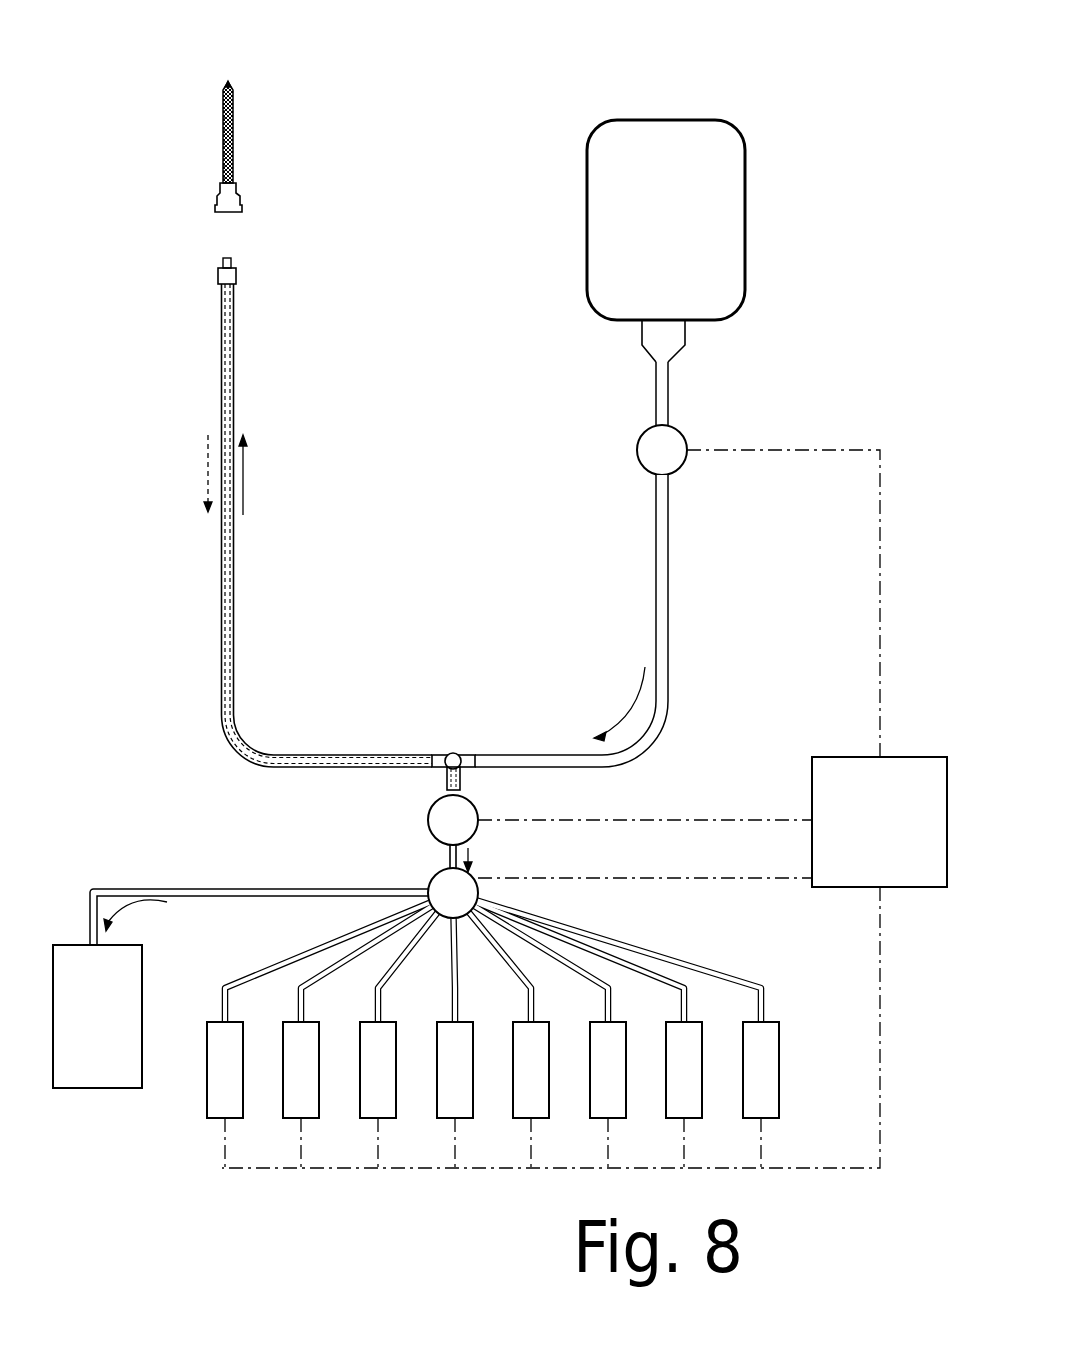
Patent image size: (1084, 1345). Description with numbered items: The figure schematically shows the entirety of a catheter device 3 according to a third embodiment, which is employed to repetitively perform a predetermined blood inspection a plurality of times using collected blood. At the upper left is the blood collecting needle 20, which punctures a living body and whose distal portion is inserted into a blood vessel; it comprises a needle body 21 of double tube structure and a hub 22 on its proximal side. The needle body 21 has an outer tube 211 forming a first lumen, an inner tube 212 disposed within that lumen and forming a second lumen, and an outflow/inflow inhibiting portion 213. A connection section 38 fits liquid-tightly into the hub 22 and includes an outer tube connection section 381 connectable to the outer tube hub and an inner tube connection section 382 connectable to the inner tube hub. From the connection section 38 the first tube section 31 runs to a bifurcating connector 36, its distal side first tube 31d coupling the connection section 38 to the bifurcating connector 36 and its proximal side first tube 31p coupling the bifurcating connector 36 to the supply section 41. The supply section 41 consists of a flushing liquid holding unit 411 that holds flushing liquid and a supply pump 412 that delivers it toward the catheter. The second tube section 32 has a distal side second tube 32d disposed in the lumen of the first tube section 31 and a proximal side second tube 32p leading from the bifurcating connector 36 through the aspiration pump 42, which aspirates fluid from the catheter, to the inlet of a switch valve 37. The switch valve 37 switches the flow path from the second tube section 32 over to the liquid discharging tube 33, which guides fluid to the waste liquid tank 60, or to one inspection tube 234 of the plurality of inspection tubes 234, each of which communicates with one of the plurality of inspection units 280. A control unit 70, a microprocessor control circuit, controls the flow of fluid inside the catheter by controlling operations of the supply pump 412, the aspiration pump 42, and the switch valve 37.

The catheter device 3 is at (86, 35).
The blood collecting needle 20 is at (128, 207).
The needle body 21 is at (225, 113).
The outer tube 211 is at (233, 137).
The inner tube 212 is at (237, 158).
The outflow/inflow inhibiting portion 213 is at (236, 88).
The hub 22 is at (222, 202).
The connection section 38 is at (106, 352).
The outer tube connection section 381 is at (218, 283).
The inner tube connection section 382 is at (222, 263).
The first tube section 31 is at (358, 658).
The distal side first tube 31d is at (390, 752).
The proximal side first tube 31p is at (500, 752).
The bifurcating connector 36 is at (462, 768).
The second tube section 32 is at (351, 880).
The distal side second tube 32d is at (415, 806).
The proximal side second tube 32p is at (449, 858).
The aspiration pump 42 is at (480, 826).
The switch valve 37 is at (465, 889).
The liquid discharging tube 33 is at (217, 888).
The waste liquid tank 60 is at (83, 1076).
The inspection tubes 234 is at (262, 975).
The inspection units 280 is at (207, 1097).
The control unit 70 is at (930, 757).
The supply section 41 is at (849, 300).
The flushing liquid holding unit 411 is at (740, 288).
The supply pump 412 is at (682, 433).